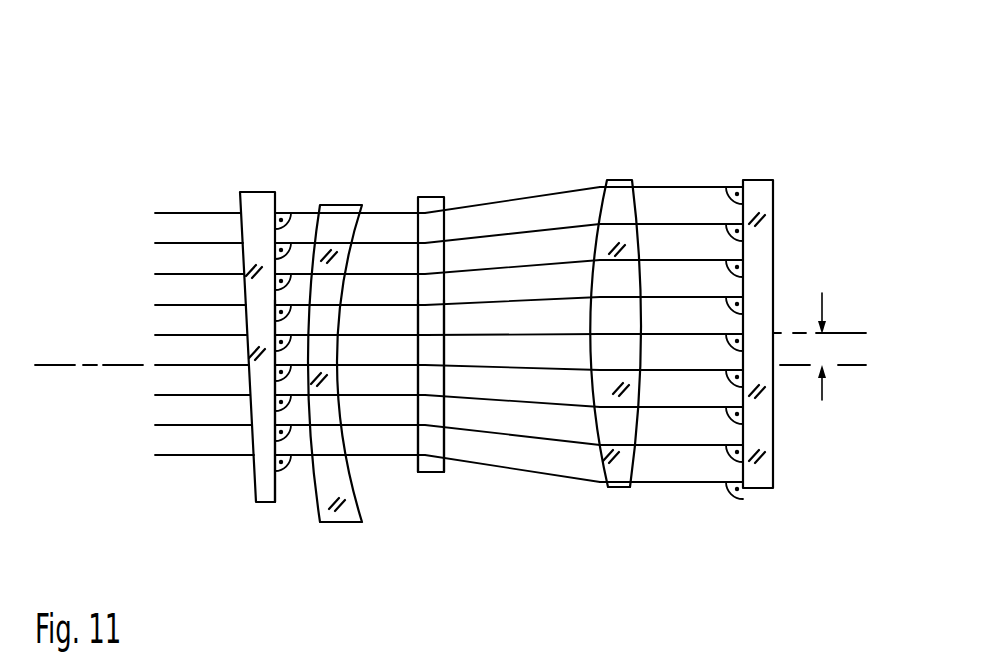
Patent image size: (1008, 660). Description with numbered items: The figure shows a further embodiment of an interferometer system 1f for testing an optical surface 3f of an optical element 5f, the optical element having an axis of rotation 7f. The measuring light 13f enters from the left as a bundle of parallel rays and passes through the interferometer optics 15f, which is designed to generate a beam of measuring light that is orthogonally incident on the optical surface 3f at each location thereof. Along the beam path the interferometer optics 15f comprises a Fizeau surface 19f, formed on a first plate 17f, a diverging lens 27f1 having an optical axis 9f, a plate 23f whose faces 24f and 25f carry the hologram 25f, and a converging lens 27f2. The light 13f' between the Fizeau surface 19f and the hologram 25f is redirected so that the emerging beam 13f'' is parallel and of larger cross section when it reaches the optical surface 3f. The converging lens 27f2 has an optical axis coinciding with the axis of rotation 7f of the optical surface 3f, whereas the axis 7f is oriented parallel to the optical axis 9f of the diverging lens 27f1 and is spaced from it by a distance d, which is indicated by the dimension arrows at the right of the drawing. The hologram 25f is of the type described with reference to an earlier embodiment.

The interferometer system 1f is at (298, 128).
The interferometer optics 15f is at (515, 134).
The beam of measuring light 13f is at (198, 300).
The beam of measuring light 13f' is at (437, 304).
The beam of measuring light 13f'' is at (671, 302).
The first plate 17f is at (265, 347).
The Fizeau surface 19f is at (275, 490).
The plane-parallel plate 23f is at (428, 338).
The entry surface of plate 24f is at (415, 467).
The hologram 25f is at (443, 467).
The diverging lens 27f1 is at (348, 523).
The converging lens 27f2 is at (619, 490).
The optical surface 3f is at (741, 188).
The optical element 5f is at (770, 180).
The axis of rotation 7f is at (842, 333).
The optical axis 9f is at (60, 365).
The distance d is at (815, 352).